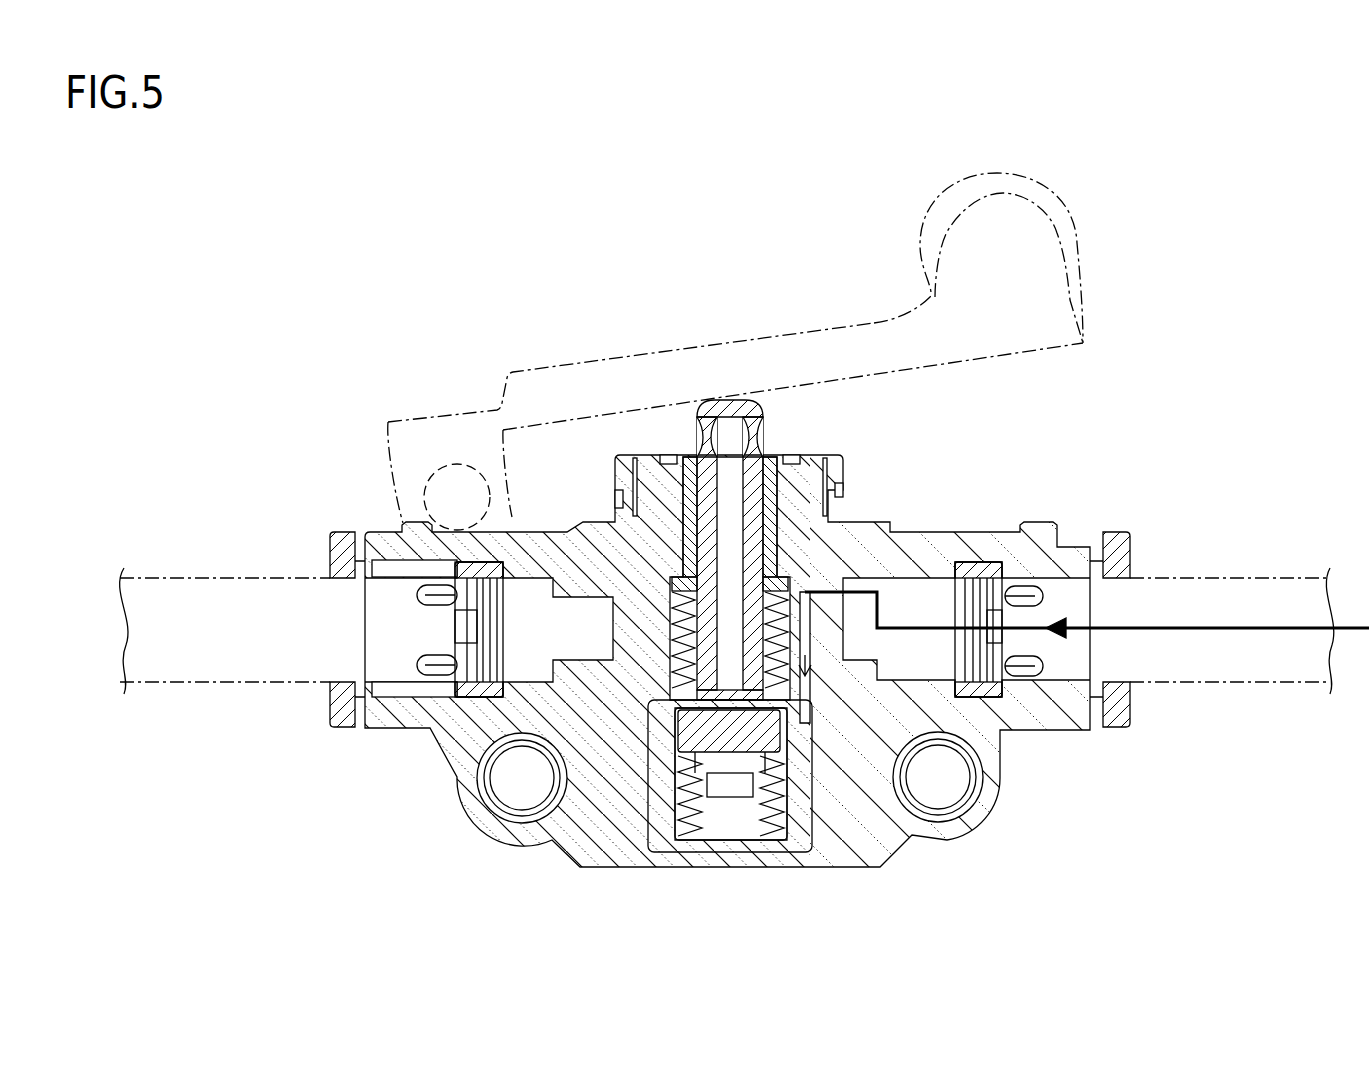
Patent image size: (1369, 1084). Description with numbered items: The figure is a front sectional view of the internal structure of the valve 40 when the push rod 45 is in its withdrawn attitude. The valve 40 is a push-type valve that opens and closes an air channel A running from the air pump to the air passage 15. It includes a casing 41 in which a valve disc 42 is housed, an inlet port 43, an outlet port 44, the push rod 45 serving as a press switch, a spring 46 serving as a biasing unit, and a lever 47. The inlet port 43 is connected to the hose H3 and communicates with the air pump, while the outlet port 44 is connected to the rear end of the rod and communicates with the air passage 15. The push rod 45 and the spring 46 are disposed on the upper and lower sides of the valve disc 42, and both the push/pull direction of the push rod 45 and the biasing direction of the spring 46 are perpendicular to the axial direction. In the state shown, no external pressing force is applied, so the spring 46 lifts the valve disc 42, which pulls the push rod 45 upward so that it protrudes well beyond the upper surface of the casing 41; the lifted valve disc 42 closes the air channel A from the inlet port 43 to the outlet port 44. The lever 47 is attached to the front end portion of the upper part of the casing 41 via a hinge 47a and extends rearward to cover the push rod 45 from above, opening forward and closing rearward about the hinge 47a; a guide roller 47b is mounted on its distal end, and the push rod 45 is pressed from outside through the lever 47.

The valve 40 is at (726, 249).
The casing 41 is at (585, 540).
The valve disc 42 is at (793, 742).
The inlet port 43 is at (1130, 610).
The outlet port 44 is at (330, 608).
The push rod 45 is at (766, 453).
The spring 46 is at (768, 735).
The lever 47 is at (735, 320).
The hinge 47a is at (456, 470).
The guide roller 47b is at (1010, 185).
The air passage 15 is at (197, 652).
The hose H3 is at (1228, 655).
The air channel A is at (1103, 632).